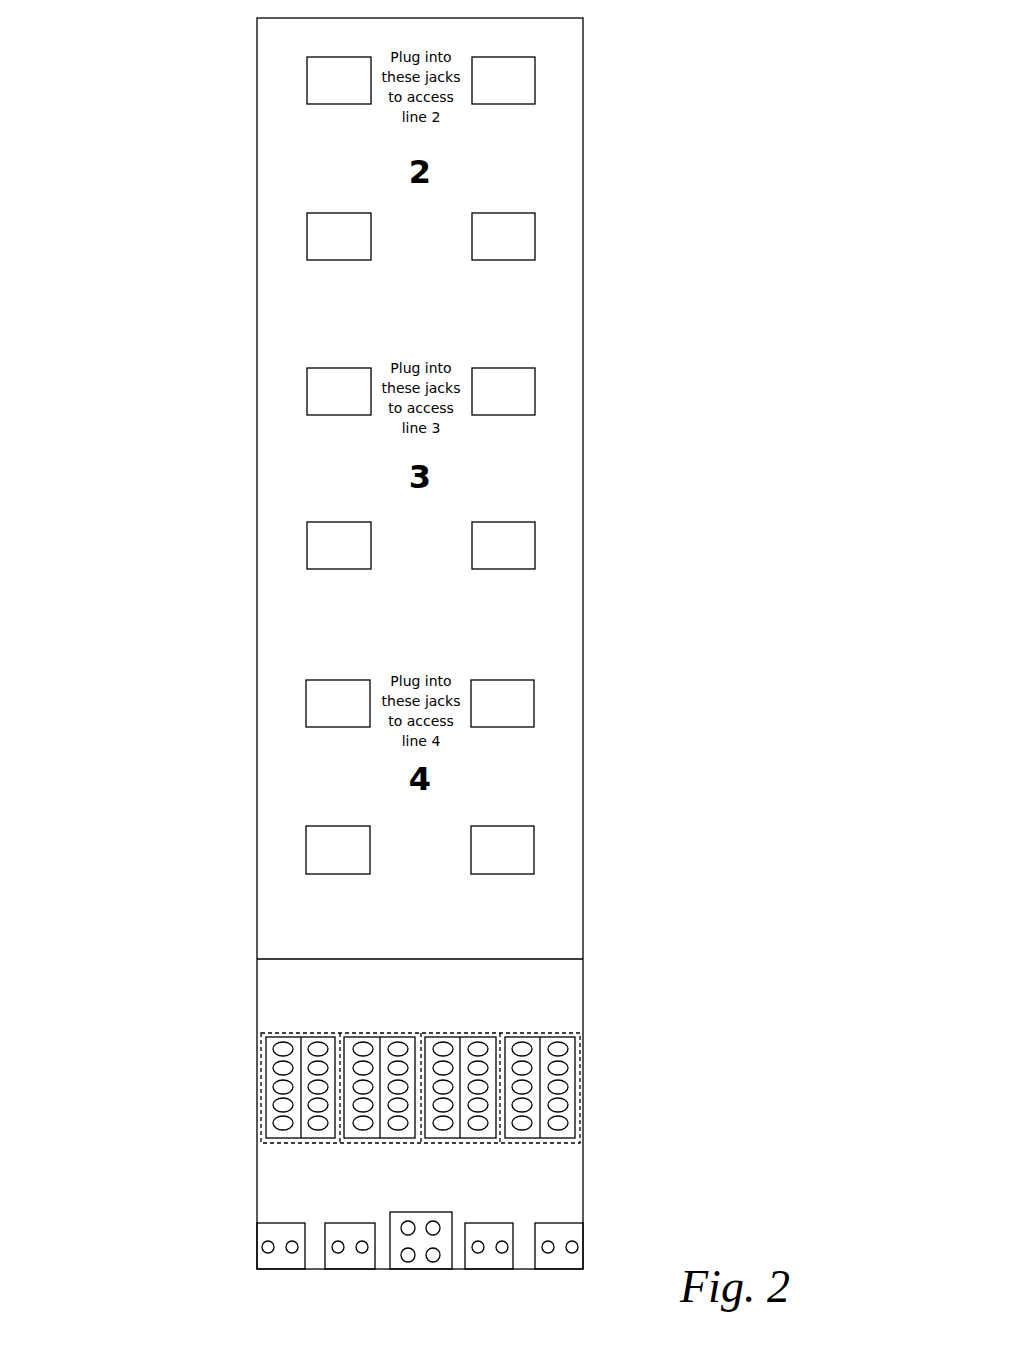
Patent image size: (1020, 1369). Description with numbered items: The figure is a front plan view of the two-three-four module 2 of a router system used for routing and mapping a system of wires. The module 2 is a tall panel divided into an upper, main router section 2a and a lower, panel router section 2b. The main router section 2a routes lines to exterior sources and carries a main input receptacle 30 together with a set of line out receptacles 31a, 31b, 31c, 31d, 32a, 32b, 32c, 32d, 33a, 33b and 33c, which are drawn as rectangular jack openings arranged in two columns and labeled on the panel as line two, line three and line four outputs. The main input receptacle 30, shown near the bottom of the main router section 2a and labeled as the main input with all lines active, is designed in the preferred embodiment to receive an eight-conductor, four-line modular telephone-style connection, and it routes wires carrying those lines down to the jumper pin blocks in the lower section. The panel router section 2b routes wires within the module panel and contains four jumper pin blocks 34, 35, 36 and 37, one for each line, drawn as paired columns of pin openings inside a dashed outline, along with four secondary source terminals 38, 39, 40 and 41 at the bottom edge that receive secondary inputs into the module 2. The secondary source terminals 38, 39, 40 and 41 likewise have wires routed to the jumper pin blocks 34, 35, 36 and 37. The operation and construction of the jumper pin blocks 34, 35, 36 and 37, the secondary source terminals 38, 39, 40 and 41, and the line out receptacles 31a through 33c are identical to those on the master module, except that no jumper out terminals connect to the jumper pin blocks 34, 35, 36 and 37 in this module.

The 2, 3, 4 module 2 is at (188, 53).
The main router section 2a is at (227, 465).
The panel router section 2b is at (247, 1088).
The main input receptacle 30 is at (306, 856).
The line out receptacle 31a is at (307, 85).
The line out receptacle 31b is at (535, 85).
The line out receptacle 31c is at (307, 241).
The line out receptacle 31d is at (535, 241).
The line out receptacle 32a is at (307, 396).
The line out receptacle 32b is at (535, 396).
The line out receptacle 32c is at (307, 553).
The line out receptacle 32d is at (535, 553).
The line out receptacle 33a is at (306, 700).
The line out receptacle 33b is at (534, 700).
The line out receptacle 33c is at (534, 856).
The jumper pin block 34 is at (282, 1145).
The jumper pin block 35 is at (367, 1145).
The jumper pin block 36 is at (448, 1145).
The jumper pin block 37 is at (523, 1145).
The secondary source terminal 38 is at (277, 1269).
The secondary source terminal 39 is at (345, 1269).
The secondary source terminal 40 is at (485, 1269).
The secondary source terminal 41 is at (557, 1269).